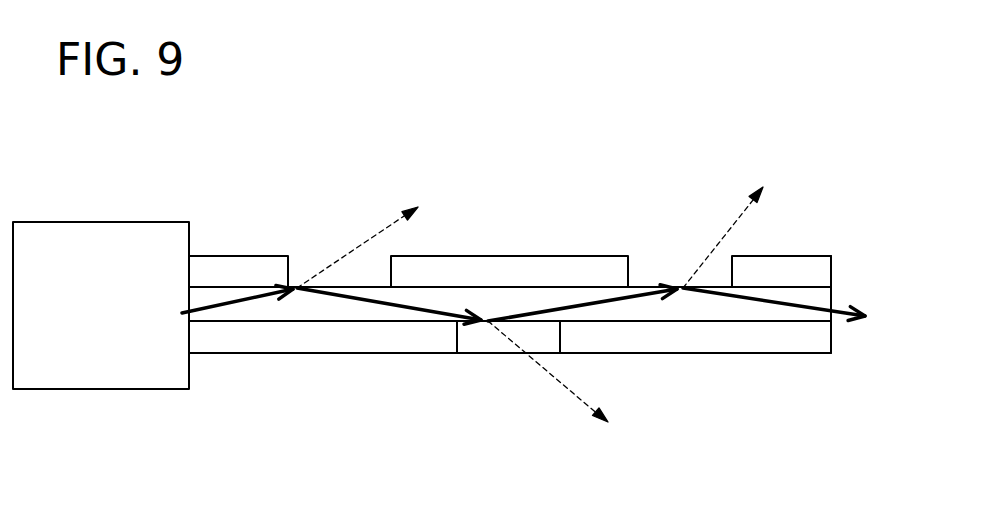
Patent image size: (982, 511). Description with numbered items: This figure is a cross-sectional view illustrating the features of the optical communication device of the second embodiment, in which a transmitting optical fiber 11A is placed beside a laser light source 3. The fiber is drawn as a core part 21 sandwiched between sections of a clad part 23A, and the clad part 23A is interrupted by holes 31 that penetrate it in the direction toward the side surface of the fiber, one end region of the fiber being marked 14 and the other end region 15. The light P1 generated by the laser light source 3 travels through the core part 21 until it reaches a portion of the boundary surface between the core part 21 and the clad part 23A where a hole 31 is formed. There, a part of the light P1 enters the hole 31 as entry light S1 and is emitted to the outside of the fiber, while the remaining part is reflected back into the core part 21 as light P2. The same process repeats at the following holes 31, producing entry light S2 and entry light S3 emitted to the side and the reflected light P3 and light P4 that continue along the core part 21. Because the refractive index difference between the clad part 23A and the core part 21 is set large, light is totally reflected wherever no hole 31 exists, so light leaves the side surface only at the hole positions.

The laser light source 3 is at (102, 367).
The transmitting optical fiber 11A is at (582, 135).
The first end portion 14 is at (207, 366).
The second end portion 15 is at (825, 368).
The core part 21 is at (305, 312).
The clad part 23A is at (227, 270).
The hole 31 is at (306, 260).
The light P1 is at (246, 304).
The light P2 is at (407, 312).
The light P3 is at (572, 302).
The light P4 is at (778, 308).
The entry light S1 is at (370, 238).
The entry light S2 is at (568, 390).
The entry light S3 is at (722, 230).